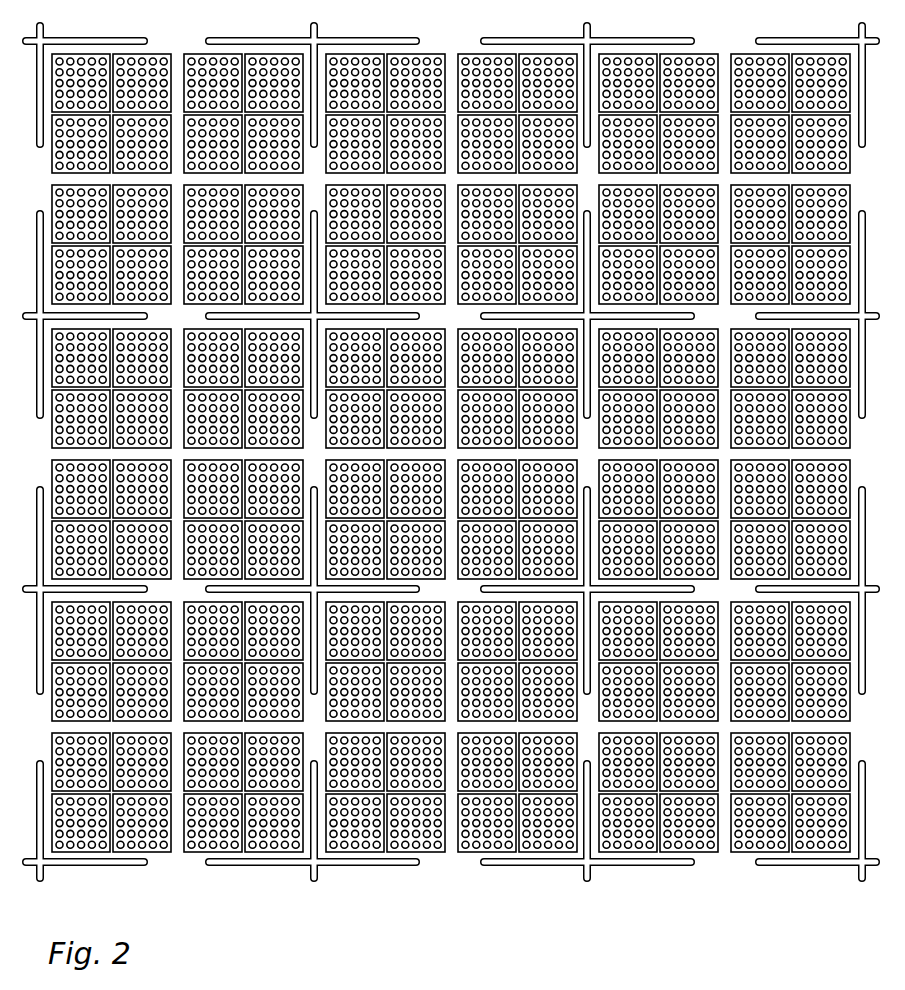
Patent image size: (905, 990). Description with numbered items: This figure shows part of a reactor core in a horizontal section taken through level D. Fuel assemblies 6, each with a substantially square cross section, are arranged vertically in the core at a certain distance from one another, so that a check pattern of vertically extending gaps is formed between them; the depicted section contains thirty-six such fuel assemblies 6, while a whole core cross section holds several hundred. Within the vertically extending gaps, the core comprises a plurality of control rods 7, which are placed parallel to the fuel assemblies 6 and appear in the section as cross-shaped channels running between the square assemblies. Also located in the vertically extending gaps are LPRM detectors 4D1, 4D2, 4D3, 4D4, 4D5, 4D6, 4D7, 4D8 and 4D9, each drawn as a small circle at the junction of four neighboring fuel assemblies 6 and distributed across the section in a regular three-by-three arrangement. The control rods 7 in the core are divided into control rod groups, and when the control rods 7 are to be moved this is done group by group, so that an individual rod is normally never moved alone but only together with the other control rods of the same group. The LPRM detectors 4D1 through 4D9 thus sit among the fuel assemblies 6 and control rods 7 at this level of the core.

The fuel assembly 6 is at (50, 163).
The control rod 7 is at (37, 424).
The LPRM detector 4D1 is at (159, 179).
The LPRM detector 4D2 is at (455, 180).
The LPRM detector 4D3 is at (728, 180).
The LPRM detector 4D4 is at (181, 455).
The LPRM detector 4D5 is at (455, 455).
The LPRM detector 4D6 is at (728, 455).
The LPRM detector 4D7 is at (181, 729).
The LPRM detector 4D8 is at (455, 729).
The LPRM detector 4D9 is at (728, 729).